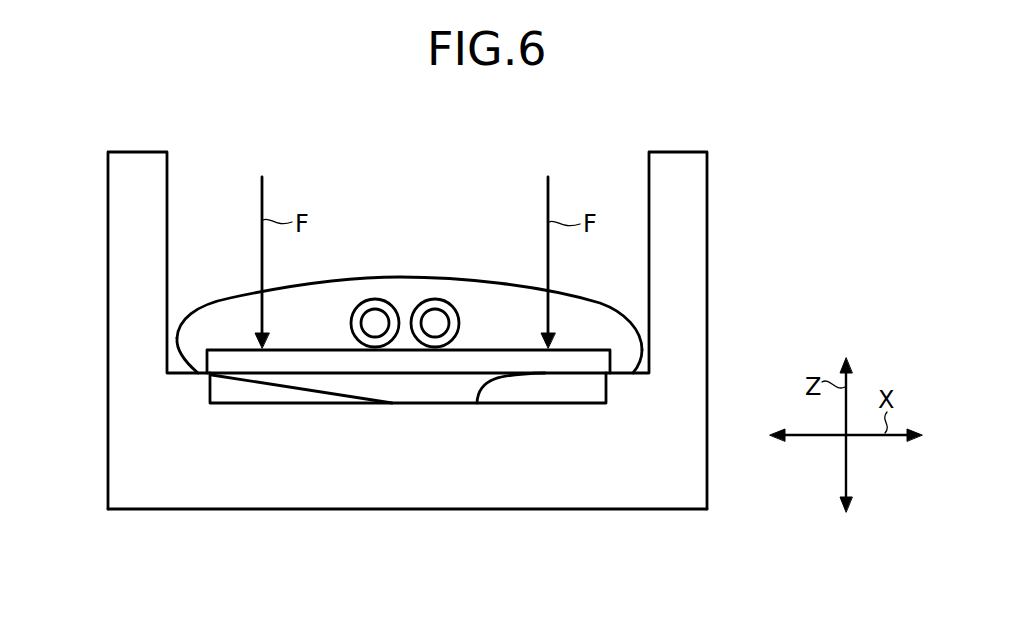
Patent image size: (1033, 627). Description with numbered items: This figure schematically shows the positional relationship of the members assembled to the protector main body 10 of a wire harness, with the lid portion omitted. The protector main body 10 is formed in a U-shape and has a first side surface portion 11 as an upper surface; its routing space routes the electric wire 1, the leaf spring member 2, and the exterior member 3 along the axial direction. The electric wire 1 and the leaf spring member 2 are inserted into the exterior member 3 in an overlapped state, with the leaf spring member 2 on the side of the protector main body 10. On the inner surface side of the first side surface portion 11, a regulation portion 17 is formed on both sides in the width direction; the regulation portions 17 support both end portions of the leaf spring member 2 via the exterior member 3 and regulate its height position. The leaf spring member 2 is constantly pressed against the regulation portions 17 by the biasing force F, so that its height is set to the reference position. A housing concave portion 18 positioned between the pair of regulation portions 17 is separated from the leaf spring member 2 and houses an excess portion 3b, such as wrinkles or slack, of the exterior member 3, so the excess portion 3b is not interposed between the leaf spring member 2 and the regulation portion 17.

The electric wire 1 is at (373, 320).
The leaf spring member 2 is at (235, 362).
The exterior member 3 is at (477, 282).
The excess portion 3b is at (467, 393).
The protector main body 10 is at (698, 199).
The first side surface portion 11 is at (387, 502).
The regulation portion 17 is at (182, 371).
The housing concave portion 18 is at (282, 403).